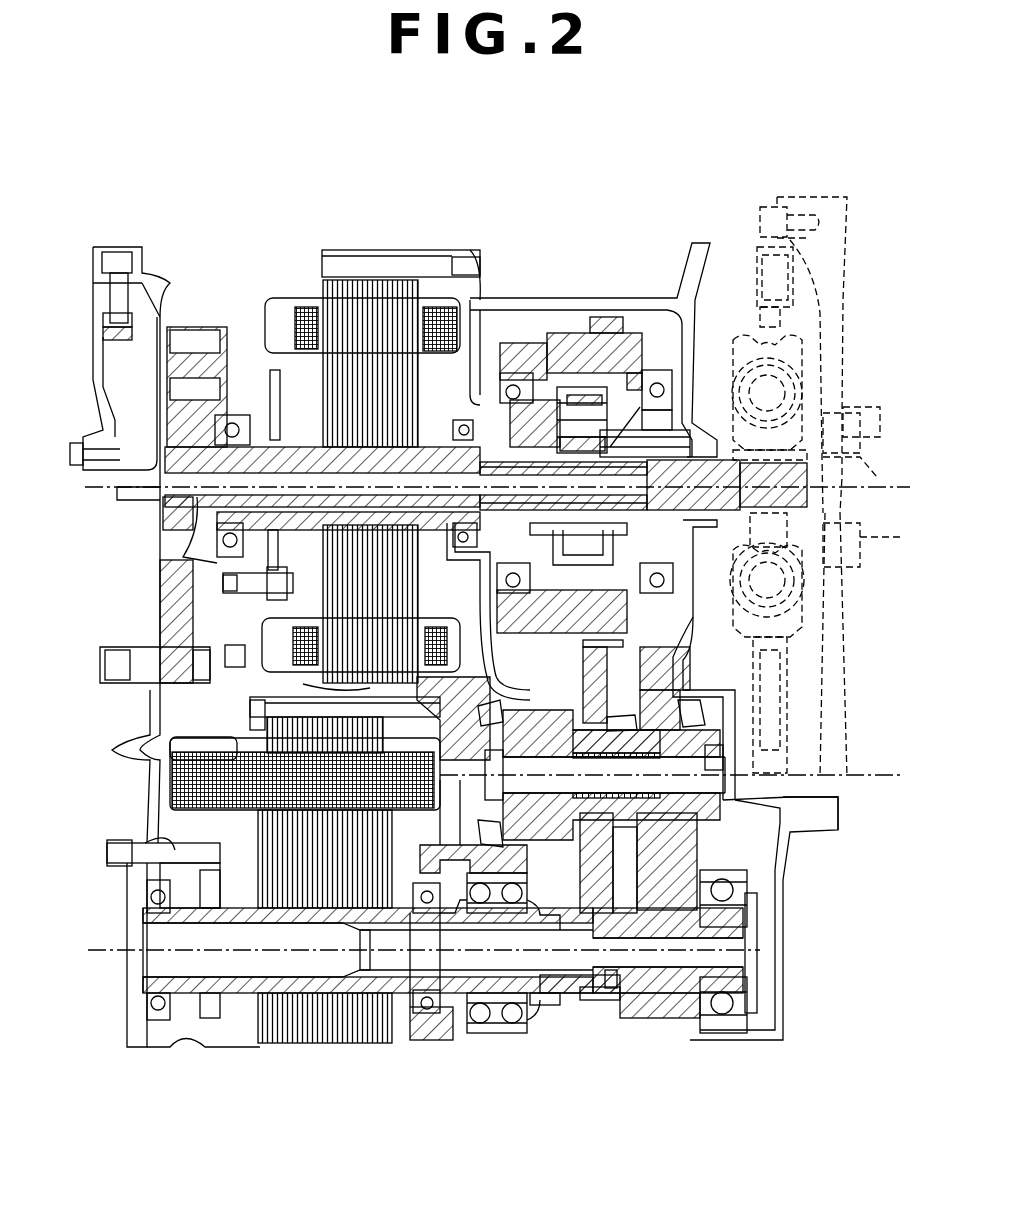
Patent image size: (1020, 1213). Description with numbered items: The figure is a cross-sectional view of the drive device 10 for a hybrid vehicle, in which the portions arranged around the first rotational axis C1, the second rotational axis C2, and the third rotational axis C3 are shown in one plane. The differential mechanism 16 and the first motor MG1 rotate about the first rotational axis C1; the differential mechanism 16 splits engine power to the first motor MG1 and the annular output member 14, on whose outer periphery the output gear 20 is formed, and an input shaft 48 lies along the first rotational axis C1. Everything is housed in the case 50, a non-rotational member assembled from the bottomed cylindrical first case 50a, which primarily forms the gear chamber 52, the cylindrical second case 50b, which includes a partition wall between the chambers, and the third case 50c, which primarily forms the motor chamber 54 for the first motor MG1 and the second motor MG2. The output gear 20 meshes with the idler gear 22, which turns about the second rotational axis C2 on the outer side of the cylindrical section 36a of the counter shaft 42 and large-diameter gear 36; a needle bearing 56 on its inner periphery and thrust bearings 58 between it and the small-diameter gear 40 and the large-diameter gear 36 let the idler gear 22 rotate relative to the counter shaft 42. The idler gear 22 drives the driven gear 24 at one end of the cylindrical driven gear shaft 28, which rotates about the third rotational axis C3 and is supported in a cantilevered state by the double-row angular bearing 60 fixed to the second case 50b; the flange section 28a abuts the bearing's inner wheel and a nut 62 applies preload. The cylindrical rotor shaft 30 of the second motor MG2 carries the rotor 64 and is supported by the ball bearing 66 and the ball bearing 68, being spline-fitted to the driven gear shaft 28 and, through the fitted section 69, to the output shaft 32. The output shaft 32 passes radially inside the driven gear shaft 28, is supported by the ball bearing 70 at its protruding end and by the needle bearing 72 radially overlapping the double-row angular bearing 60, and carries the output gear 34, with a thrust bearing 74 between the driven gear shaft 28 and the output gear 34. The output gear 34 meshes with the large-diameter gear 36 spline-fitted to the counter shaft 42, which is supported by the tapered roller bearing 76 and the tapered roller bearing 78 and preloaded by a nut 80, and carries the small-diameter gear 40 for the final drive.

The drive device 10 is at (320, 203).
The output member 14 is at (575, 350).
The differential mechanism 16 is at (558, 392).
The output gear 20 is at (605, 320).
The idler gear 22 is at (598, 692).
The driven gear 24 is at (600, 1002).
The driven gear shaft 28 is at (570, 990).
The flange section 28a is at (530, 1007).
The rotor shaft 30 is at (242, 985).
The output shaft 32 is at (760, 975).
The output gear 34 is at (670, 1020).
The large-diameter gear 36 is at (668, 650).
The cylindrical section 36a is at (616, 771).
The small-diameter gear 40 is at (528, 712).
The counter shaft 42 is at (725, 785).
The input shaft 48 is at (300, 455).
The case 50 is at (127, 785).
The first case 50a is at (770, 828).
The second case 50b is at (437, 1030).
The third case 50c is at (145, 838).
The gear chamber 52 is at (645, 330).
The motor chamber 54 is at (178, 697).
The needle bearing 56 is at (625, 780).
The thrust bearing 58 is at (640, 712).
The double-row angular bearing 60 is at (493, 1030).
The nut 62 is at (455, 1020).
The rotor 64 is at (330, 1040).
The ball bearing 66 is at (158, 1012).
The ball bearing 68 is at (410, 896).
The fitted section 69 is at (352, 942).
The ball bearing 70 is at (722, 1010).
The needle bearing 72 is at (518, 920).
The thrust bearing 74 is at (620, 990).
The tapered roller bearing 76 is at (697, 712).
The tapered roller bearing 78 is at (477, 832).
The nut 80 is at (720, 760).
The first motor MG1 is at (284, 280).
The second motor MG2 is at (240, 1050).
The first rotational axis C1 is at (92, 494).
The second rotational axis C2 is at (866, 782).
The third rotational axis C3 is at (102, 958).